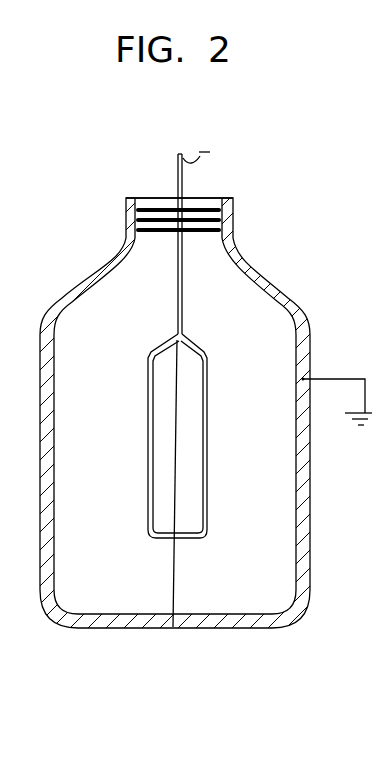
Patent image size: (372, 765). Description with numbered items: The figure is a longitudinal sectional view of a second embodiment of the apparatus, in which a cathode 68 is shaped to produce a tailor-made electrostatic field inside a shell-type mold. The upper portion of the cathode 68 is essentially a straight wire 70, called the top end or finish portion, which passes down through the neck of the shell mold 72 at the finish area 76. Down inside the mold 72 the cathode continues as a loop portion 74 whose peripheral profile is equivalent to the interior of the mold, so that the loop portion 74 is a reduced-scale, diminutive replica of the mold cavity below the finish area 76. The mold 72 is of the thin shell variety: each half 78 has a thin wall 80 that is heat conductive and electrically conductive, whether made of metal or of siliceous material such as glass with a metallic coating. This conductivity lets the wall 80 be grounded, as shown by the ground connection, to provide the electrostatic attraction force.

The cathode 68 is at (190, 189).
The straight wire 70 is at (177, 173).
The shell mold 72 is at (214, 644).
The loop portion 74 is at (208, 436).
The finish area 76 is at (243, 216).
The mold half 78 is at (316, 479).
The thin wall 80 is at (300, 513).